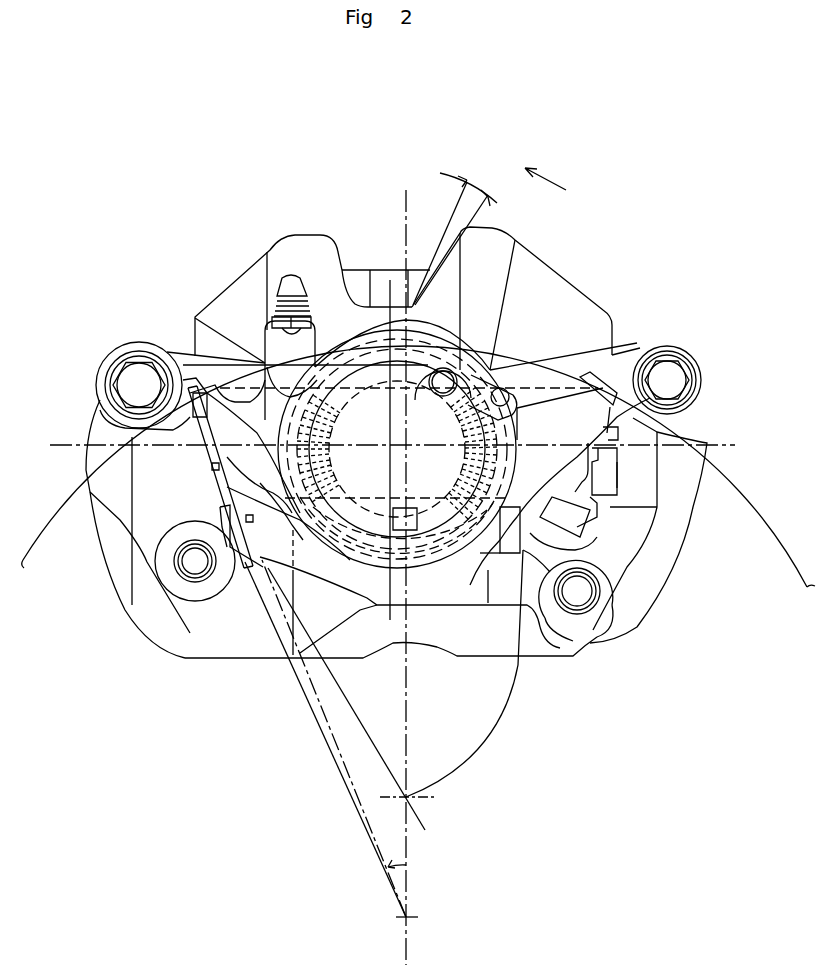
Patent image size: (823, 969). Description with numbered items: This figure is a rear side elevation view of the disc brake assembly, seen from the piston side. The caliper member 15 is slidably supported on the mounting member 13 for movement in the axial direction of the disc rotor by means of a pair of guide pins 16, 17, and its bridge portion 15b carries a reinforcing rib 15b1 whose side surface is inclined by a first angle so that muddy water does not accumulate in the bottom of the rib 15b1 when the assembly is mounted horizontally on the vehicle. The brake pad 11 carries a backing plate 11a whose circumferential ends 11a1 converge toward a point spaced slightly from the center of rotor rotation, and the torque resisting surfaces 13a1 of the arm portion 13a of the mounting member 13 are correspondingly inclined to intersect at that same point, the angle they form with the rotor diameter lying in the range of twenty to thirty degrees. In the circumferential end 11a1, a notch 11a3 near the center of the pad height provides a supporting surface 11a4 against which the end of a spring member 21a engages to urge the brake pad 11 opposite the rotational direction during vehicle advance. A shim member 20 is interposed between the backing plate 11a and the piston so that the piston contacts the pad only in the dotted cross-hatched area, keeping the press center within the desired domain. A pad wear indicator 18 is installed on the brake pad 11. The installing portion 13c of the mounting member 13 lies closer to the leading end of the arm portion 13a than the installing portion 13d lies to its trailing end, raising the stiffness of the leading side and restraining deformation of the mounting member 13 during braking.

The brake pad 11 is at (523, 570).
The backing plate 11a is at (263, 565).
The circumferential ends 11a1 is at (207, 440).
The notch 11a3 is at (588, 452).
The supporting surface 11a4 is at (585, 490).
The mounting member 13 is at (483, 640).
The arm portion 13a is at (690, 487).
The torque resisting surfaces 13a1 is at (207, 470).
The installing portion 13c is at (195, 560).
The installing portion 13d is at (578, 612).
The caliper member 15 is at (443, 560).
The bridge portion 15b is at (378, 285).
The rib 15b1 is at (488, 250).
The guide pin 16 is at (130, 386).
The guide pin 17 is at (668, 384).
The pad wear indicator 18 is at (553, 575).
The shim member 20 is at (256, 560).
The spring member 21a is at (618, 474).